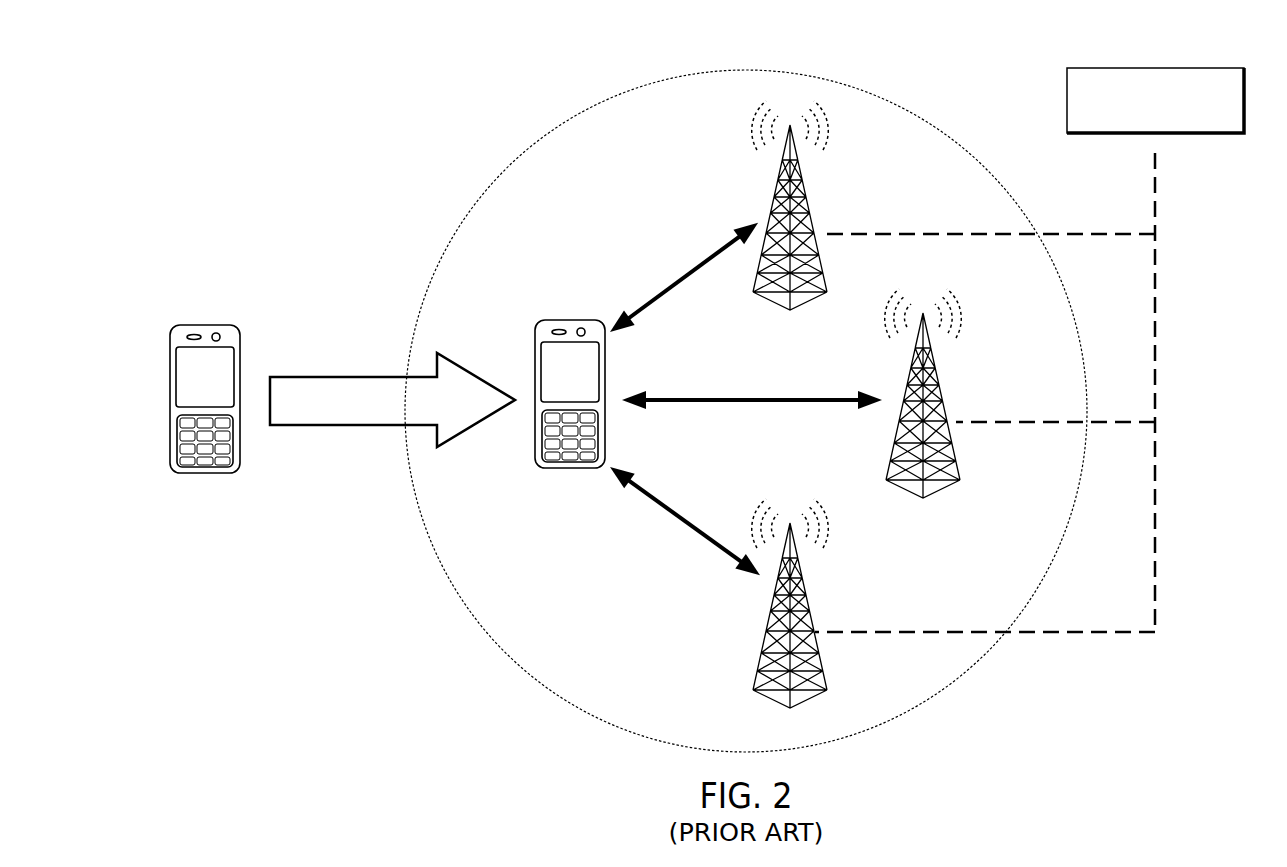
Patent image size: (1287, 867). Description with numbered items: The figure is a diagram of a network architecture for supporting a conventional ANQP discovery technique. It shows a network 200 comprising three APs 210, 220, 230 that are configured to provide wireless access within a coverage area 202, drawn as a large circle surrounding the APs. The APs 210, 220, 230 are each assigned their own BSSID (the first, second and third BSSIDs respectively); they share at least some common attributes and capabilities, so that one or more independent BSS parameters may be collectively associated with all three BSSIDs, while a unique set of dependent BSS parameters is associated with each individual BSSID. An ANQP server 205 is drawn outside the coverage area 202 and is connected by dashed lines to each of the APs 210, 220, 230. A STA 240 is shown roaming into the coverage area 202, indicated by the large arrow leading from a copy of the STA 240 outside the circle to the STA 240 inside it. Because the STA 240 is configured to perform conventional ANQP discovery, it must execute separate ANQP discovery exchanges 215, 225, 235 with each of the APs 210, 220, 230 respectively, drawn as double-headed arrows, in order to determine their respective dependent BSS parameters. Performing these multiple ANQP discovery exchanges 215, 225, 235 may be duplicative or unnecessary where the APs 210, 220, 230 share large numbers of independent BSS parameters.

The network 200 is at (326, 142).
The coverage area 202 is at (918, 722).
The ANQP server 205 is at (1192, 66).
The AP 210 is at (807, 202).
The ANQP discovery exchange 215 is at (687, 277).
The AP 220 is at (942, 390).
The ANQP discovery exchange 225 is at (752, 397).
The AP 230 is at (818, 631).
The ANQP discovery exchange 235 is at (683, 527).
The STA 240 is at (203, 473).